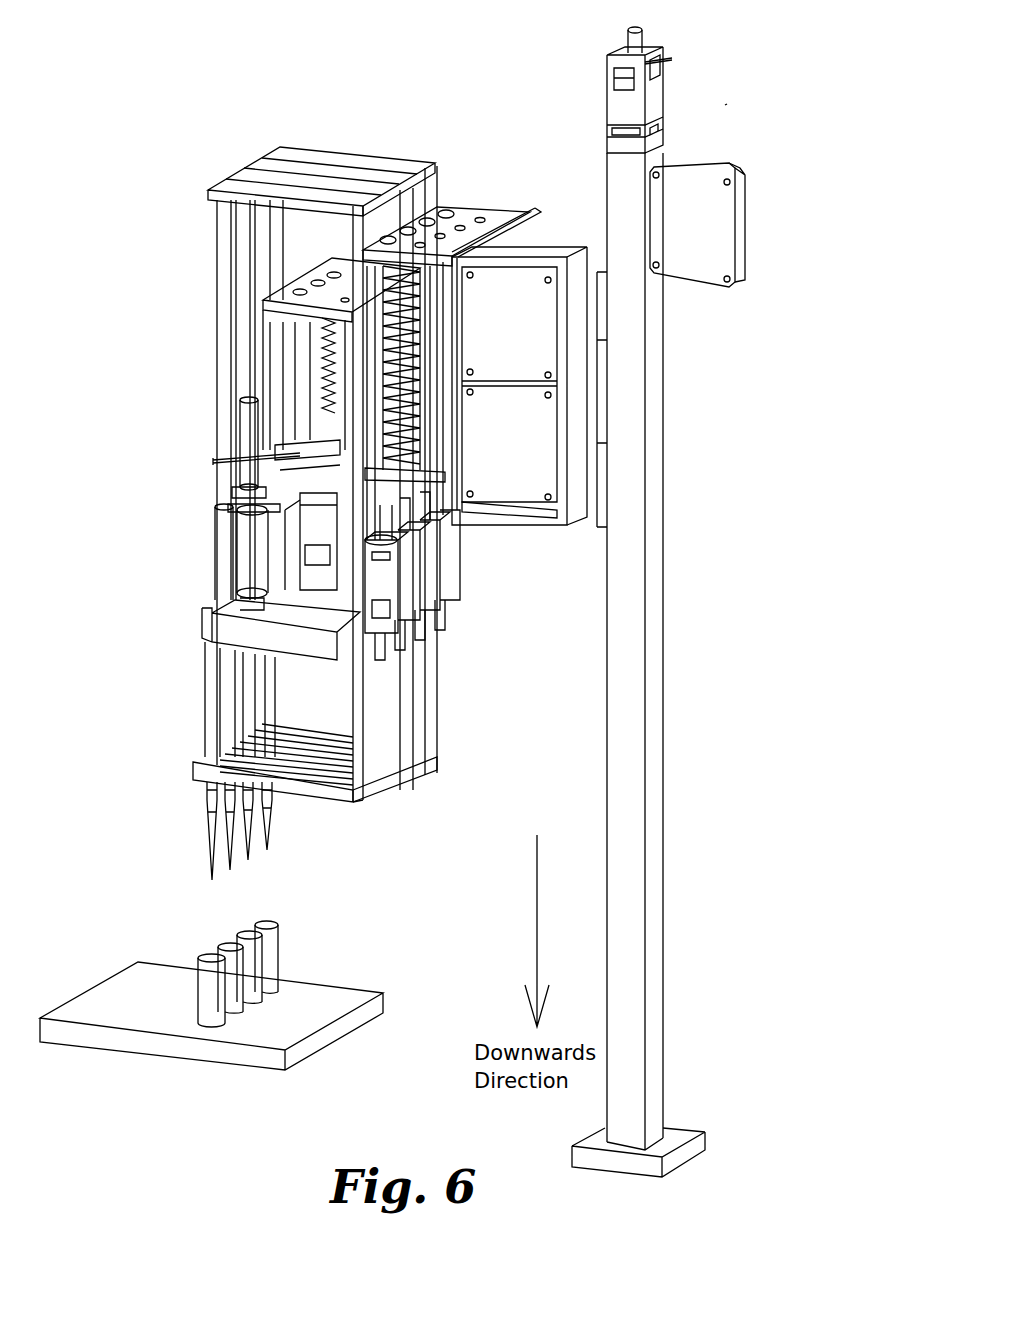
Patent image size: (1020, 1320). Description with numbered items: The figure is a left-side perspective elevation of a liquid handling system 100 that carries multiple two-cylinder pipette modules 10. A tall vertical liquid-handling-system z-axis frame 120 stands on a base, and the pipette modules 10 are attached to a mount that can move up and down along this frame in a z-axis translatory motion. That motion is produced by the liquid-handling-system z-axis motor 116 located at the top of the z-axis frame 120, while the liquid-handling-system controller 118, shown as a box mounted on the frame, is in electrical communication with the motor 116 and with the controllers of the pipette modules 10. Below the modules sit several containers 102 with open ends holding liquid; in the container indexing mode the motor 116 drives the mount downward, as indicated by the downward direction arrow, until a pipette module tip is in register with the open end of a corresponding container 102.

The pipette module 10 is at (258, 155).
The liquid handling system 100 is at (725, 105).
The container 102 is at (290, 932).
The liquid-handling-system z-axis motor 116 is at (660, 70).
The liquid-handling-system controller 118 is at (735, 222).
The liquid-handling-system z-axis frame 120 is at (668, 597).